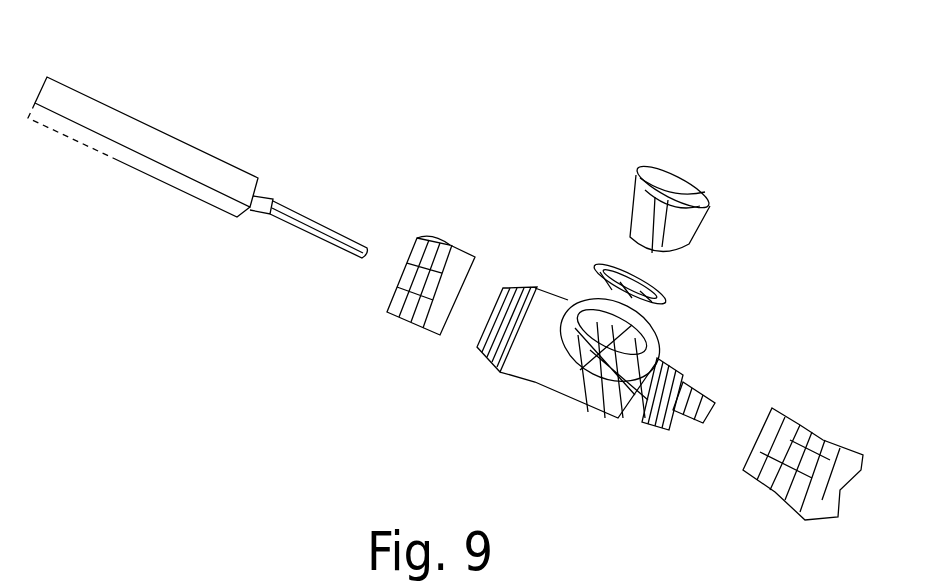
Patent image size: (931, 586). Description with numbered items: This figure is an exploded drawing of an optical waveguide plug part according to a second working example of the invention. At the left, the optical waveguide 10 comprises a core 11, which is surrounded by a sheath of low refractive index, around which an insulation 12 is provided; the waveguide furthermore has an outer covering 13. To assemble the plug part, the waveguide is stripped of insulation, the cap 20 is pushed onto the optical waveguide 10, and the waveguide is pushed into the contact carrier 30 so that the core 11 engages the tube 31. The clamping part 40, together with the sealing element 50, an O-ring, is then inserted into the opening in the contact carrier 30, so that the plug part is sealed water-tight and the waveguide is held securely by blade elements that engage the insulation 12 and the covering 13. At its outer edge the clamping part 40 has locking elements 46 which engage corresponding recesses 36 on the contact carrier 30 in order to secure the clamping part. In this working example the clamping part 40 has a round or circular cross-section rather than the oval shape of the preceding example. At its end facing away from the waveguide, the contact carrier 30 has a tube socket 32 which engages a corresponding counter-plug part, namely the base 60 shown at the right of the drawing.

The optical waveguide 10 is at (240, 107).
The core 11 is at (310, 230).
The insulation 12 is at (247, 205).
The covering 13 is at (130, 143).
The cap 20 is at (450, 243).
The contact carrier 30 is at (558, 404).
The tube 31 is at (712, 402).
The tube socket 32 is at (647, 418).
The recess 36 is at (590, 375).
The clamping part 40 is at (680, 190).
The locking element 46 is at (682, 198).
The sealing element 50 is at (668, 298).
The base 60 is at (785, 417).